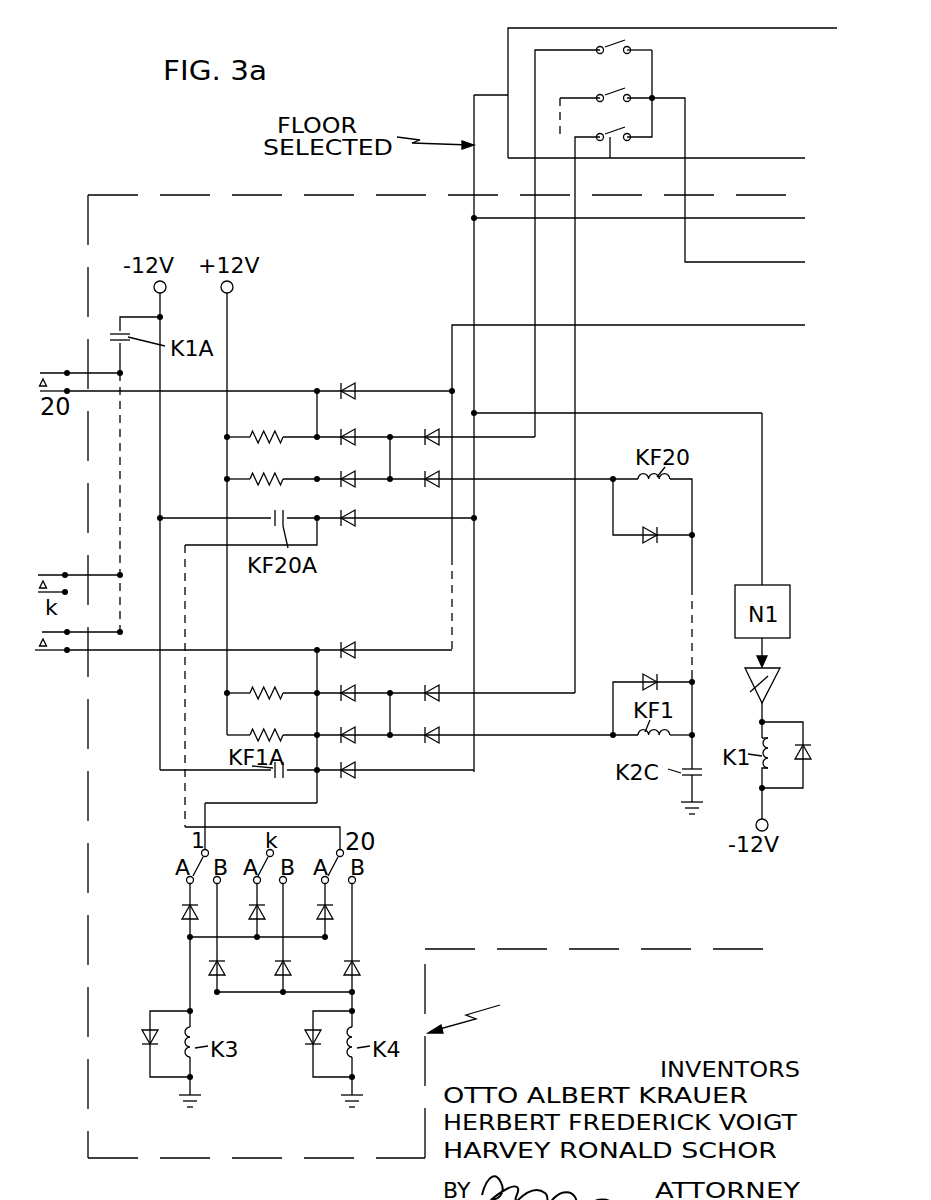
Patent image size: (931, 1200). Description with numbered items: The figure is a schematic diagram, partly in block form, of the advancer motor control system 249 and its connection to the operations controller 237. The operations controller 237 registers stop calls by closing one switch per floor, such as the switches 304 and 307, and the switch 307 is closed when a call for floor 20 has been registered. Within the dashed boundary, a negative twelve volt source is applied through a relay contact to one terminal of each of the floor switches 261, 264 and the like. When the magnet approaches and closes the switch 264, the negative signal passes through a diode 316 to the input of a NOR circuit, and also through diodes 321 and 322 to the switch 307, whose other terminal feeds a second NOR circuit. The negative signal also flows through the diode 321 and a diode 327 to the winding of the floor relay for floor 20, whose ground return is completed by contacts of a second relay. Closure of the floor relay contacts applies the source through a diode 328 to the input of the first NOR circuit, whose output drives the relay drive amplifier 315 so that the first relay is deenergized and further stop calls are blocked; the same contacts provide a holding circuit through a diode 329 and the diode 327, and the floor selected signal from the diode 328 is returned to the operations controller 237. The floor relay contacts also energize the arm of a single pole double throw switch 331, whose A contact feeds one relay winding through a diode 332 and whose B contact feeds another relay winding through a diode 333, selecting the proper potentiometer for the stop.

The operations controller 237 is at (507, 45).
The switch 307 is at (613, 43).
The floor 20 contact 20 is at (682, 158).
The switch 304 is at (595, 395).
The floor switch 264 is at (60, 373).
The diode 316 is at (346, 384).
The diode 321 is at (348, 424).
The diode 322 is at (426, 424).
The diode 329 is at (335, 466).
The diode 327 is at (428, 482).
The diode 328 is at (352, 527).
The floor switch 261 is at (62, 656).
The relay drive amplifier 315 is at (770, 685).
The single pole double throw switch 331 is at (335, 870).
The diode 332 is at (333, 915).
The diode 333 is at (360, 967).
The advancer motor control system 249 is at (665, 950).